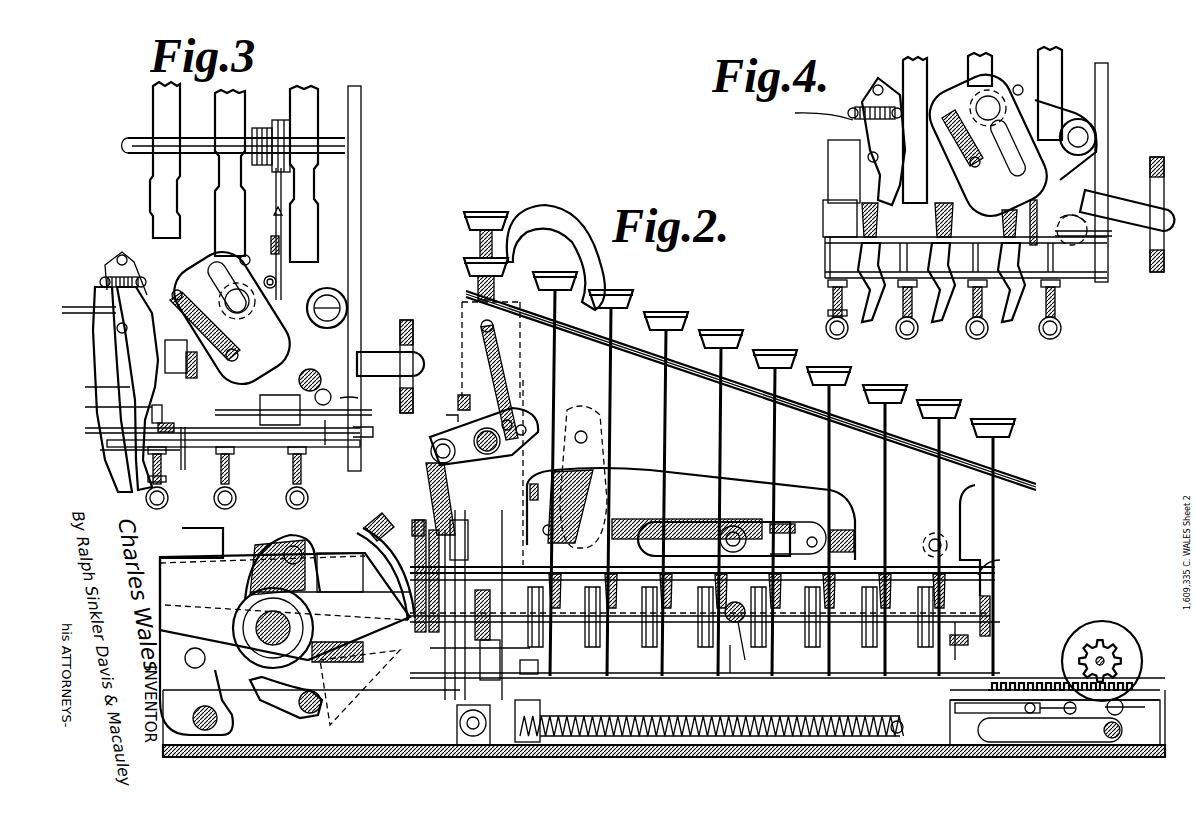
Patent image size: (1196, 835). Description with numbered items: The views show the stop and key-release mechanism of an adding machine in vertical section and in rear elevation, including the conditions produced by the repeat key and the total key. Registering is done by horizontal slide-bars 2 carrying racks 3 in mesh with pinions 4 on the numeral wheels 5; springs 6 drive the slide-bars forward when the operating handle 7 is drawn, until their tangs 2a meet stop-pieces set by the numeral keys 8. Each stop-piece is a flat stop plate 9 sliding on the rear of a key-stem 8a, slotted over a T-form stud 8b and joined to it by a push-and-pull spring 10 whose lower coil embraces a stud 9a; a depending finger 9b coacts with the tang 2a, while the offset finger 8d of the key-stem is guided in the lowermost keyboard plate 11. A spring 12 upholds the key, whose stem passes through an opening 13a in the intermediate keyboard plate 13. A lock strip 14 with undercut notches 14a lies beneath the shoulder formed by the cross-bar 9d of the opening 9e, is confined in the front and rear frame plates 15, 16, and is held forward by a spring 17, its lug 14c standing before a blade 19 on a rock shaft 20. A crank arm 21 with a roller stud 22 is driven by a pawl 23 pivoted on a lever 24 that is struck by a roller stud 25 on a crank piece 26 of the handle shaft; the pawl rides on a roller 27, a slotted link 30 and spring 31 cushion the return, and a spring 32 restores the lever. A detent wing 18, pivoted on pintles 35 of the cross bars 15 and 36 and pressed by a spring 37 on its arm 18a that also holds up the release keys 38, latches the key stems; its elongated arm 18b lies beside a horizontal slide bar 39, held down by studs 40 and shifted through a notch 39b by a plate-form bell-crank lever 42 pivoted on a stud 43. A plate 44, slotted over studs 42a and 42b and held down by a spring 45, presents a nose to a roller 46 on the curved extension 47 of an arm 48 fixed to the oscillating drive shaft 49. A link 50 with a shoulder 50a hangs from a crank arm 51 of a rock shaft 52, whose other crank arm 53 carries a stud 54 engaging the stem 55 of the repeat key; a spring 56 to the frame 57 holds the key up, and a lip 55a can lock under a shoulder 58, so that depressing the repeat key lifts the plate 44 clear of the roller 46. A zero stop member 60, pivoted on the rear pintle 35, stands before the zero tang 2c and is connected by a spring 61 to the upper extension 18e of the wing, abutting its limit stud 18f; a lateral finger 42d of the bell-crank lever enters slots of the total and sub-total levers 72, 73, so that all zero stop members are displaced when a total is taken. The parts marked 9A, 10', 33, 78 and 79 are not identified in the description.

In FIG. 3, the slide-bars 2 is at (302, 478).
In FIG. 4, the slide-bars 2 is at (832, 300).
In FIG. 2, the slide-bars 2 is at (940, 700).
In FIG. 3, the tangs 2a is at (232, 455).
In FIG. 4, the tangs 2a is at (828, 283).
In FIG. 2, the tangs 2a is at (585, 678).
In FIG. 3, the zero tang 2c is at (146, 482).
In FIG. 4, the zero tang 2c is at (828, 314).
In FIG. 2, the zero tang 2c is at (432, 706).
In FIG. 2, the racks 3 is at (1052, 683).
In FIG. 2, the pinions 4 is at (1122, 661).
In FIG. 2, the numeral wheels 5 is at (1120, 648).
In FIG. 3, the springs 6 is at (286, 504).
In FIG. 4, the springs 6 is at (900, 338).
In FIG. 2, the springs 6 is at (790, 740).
In FIG. 2, the operating handle 7 is at (582, 232).
In FIG. 2, the numeral keys 8 is at (725, 330).
In FIG. 3, the key-stem 8a is at (306, 92).
In FIG. 4, the key-stem 8a is at (968, 68).
In FIG. 2, the key-stem 8a is at (721, 398).
In FIG. 2, the T-form stud 8b is at (862, 590).
In FIG. 3, the depending finger 8d is at (189, 463).
In FIG. 3, the stop plate 9 is at (130, 370).
In FIG. 2, the stop plate 9 is at (856, 565).
In FIG. 2, the stud 9a is at (862, 640).
In FIG. 3, the depending flat finger 9b is at (120, 480).
In FIG. 3, the cross-bar 9d is at (152, 425).
In FIG. 3, the opening 9e is at (150, 410).
In FIG. 2, the lever pivot 9A is at (942, 548).
In FIG. 2, the push-and-pull spring 10 is at (664, 641).
In FIG. 4, the plate 10' is at (902, 121).
In FIG. 3, the lowermost keyboard plate 11 is at (100, 451).
In FIG. 2, the lowermost keyboard plate 11 is at (790, 676).
In FIG. 3, the spring 12 is at (223, 398).
In FIG. 2, the spring 12 is at (800, 616).
In FIG. 3, the intermediate keyboard plate 13 is at (83, 307).
In FIG. 4, the intermediate keyboard plate 13 is at (814, 113).
In FIG. 2, the intermediate keyboard plate 13 is at (590, 560).
In FIG. 2, the opening 13a is at (683, 536).
In FIG. 3, the lock strip 14 is at (106, 444).
In FIG. 4, the lock strip 14 is at (825, 258).
In FIG. 2, the lock strip 14 is at (826, 676).
In FIG. 2, the notches 14a is at (670, 662).
In FIG. 2, the lug 14c is at (738, 660).
In FIG. 2, the front transverse frame plate 15 is at (970, 640).
In FIG. 4, the rear transverse frame plate 16 is at (828, 205).
In FIG. 2, the rear transverse frame plate 16 is at (481, 649).
In FIG. 2, the spring 17 is at (672, 676).
In FIG. 3, the detent wing 18 is at (111, 343).
In FIG. 4, the detent wing 18 is at (895, 175).
In FIG. 2, the detent wing 18 is at (560, 615).
In FIG. 2, the arm 18a is at (985, 578).
In FIG. 3, the elongated arm 18b is at (100, 380).
In FIG. 4, the elongated arm 18b is at (1002, 218).
In FIG. 3, the upper extension 18e is at (134, 262).
In FIG. 4, the upper extension 18e is at (875, 86).
In FIG. 2, the upper extension 18e is at (517, 557).
In FIG. 3, the limit stud 18f is at (116, 258).
In FIG. 2, the limit stud 18f is at (515, 520).
In FIG. 2, the blade 19 is at (749, 660).
In FIG. 2, the rock shaft 20 is at (736, 602).
In FIG. 2, the crank arm 21 is at (798, 542).
In FIG. 2, the roller stud 22 is at (740, 530).
In FIG. 2, the pawl 23 is at (684, 528).
In FIG. 2, the lever 24 is at (580, 500).
In FIG. 2, the roller stud 25 is at (524, 661).
In FIG. 2, the crank piece 26 is at (410, 757).
In FIG. 2, the roller 27 is at (714, 539).
In FIG. 2, the slotted link 30 is at (789, 525).
In FIG. 2, the spring 31 is at (848, 528).
In FIG. 2, the spring 32 is at (530, 496).
In FIG. 2, the pin 33 is at (525, 463).
In FIG. 3, the pintles 35 is at (116, 328).
In FIG. 4, the pintles 35 is at (868, 160).
In FIG. 2, the pintles 35 is at (990, 552).
In FIG. 4, the rear frame cross bar 36 is at (828, 150).
In FIG. 2, the rear frame cross bar 36 is at (465, 607).
In FIG. 2, the spring 37 is at (992, 604).
In FIG. 2, the column-key release keys 38 is at (1012, 430).
In FIG. 3, the horizontal slide bar 39 is at (249, 398).
In FIG. 2, the horizontal slide bar 39 is at (441, 683).
In FIG. 3, the notch 39b is at (335, 424).
In FIG. 4, the notch 39b is at (1108, 250).
In FIG. 3, the studs 40 is at (326, 393).
In FIG. 4, the studs 40 is at (1112, 234).
In FIG. 3, the bell-crank lever 42 is at (346, 316).
In FIG. 4, the bell-crank lever 42 is at (1066, 141).
In FIG. 2, the bell-crank lever 42 is at (435, 526).
In FIG. 3, the stud 42a is at (236, 310).
In FIG. 4, the stud 42a is at (992, 94).
In FIG. 3, the stud 42b is at (250, 346).
In FIG. 4, the stud 42b is at (947, 180).
In FIG. 2, the stud 42b is at (285, 606).
In FIG. 3, the lateral finger 42d is at (390, 364).
In FIG. 4, the lateral finger 42d is at (1132, 198).
In FIG. 4, the stud 43 is at (1088, 137).
In FIG. 2, the stud 43 is at (411, 520).
In FIG. 3, the plate 44 is at (190, 262).
In FIG. 4, the plate 44 is at (988, 145).
In FIG. 2, the plate 44 is at (416, 548).
In FIG. 3, the spring 45 is at (205, 315).
In FIG. 4, the spring 45 is at (977, 143).
In FIG. 2, the spring 45 is at (404, 582).
In FIG. 3, the roller 46 is at (314, 369).
In FIG. 2, the roller 46 is at (370, 522).
In FIG. 2, the upward curved extension 47 is at (355, 530).
In FIG. 2, the arm 48 is at (326, 600).
In FIG. 2, the oscillating drive shaft 49 is at (235, 628).
In FIG. 3, the link 50 is at (283, 205).
In FIG. 4, the link 50 is at (1053, 85).
In FIG. 2, the link 50 is at (464, 532).
In FIG. 3, the shoulder 50a is at (307, 399).
In FIG. 4, the shoulder 50a is at (1076, 215).
In FIG. 2, the shoulder 50a is at (351, 650).
In FIG. 3, the crank arm 51 is at (283, 120).
In FIG. 2, the crank arm 51 is at (449, 499).
In FIG. 3, the rock shaft 52 is at (124, 147).
In FIG. 2, the rock shaft 52 is at (452, 463).
In FIG. 2, the crank arm 53 is at (505, 452).
In FIG. 2, the stud 54 is at (522, 424).
In FIG. 2, the repeat key stem 55 is at (488, 217).
In FIG. 2, the lateral lip 55a is at (456, 398).
In FIG. 2, the spring 56 is at (508, 380).
In FIG. 2, the frame 57 is at (480, 324).
In FIG. 2, the shoulder 58 is at (458, 410).
In FIG. 3, the zero stop member 60 is at (112, 475).
In FIG. 4, the zero stop member 60 is at (860, 222).
In FIG. 2, the zero stop member 60 is at (475, 615).
In FIG. 3, the spring 61 is at (100, 270).
In FIG. 4, the spring 61 is at (850, 124).
In FIG. 3, the lever 72 is at (408, 378).
In FIG. 4, the lever 72 is at (1156, 272).
In FIG. 2, the lever 72 is at (411, 437).
In FIG. 3, the lever 73 is at (406, 414).
In FIG. 4, the lever 73 is at (1158, 166).
In FIG. 2, the lever 73 is at (405, 459).
In FIG. 2, the plate 78 is at (211, 631).
In FIG. 2, the arm 79 is at (307, 697).